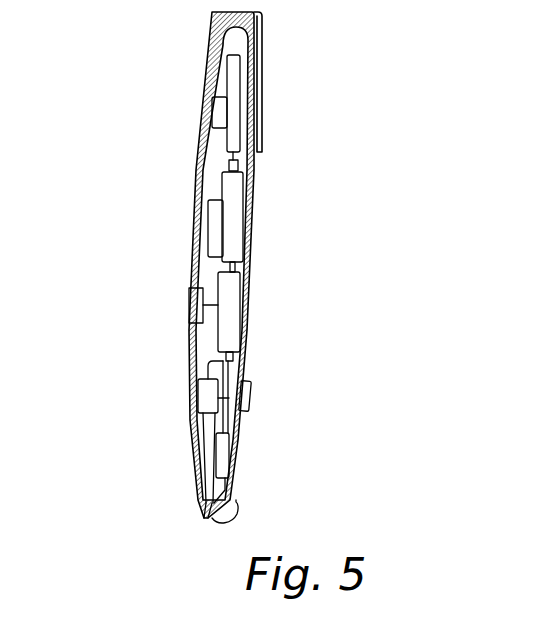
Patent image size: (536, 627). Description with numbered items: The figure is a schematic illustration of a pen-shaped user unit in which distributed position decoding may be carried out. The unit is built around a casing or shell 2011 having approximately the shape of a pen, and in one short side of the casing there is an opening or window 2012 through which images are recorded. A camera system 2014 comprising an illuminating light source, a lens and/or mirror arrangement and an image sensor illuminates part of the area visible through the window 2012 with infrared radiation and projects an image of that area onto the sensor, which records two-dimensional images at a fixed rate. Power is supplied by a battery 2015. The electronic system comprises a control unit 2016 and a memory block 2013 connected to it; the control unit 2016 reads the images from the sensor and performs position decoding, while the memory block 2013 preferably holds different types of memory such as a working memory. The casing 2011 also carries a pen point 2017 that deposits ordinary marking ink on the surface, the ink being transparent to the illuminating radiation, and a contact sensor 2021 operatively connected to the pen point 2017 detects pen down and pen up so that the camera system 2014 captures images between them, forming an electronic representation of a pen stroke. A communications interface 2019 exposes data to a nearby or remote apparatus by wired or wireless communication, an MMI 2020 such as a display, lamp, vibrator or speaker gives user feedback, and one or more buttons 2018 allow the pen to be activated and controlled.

The casing 2011 is at (245, 180).
The window 2012 is at (237, 502).
The memory block 2013 is at (237, 222).
The camera system 2014 is at (232, 452).
The battery 2015 is at (208, 223).
The control unit 2016 is at (236, 308).
The pen point 2017 is at (203, 522).
The buttons 2018 is at (250, 393).
The communications interface 2019 is at (235, 102).
The MMI 2020 is at (190, 300).
The contact sensor 2021 is at (208, 402).